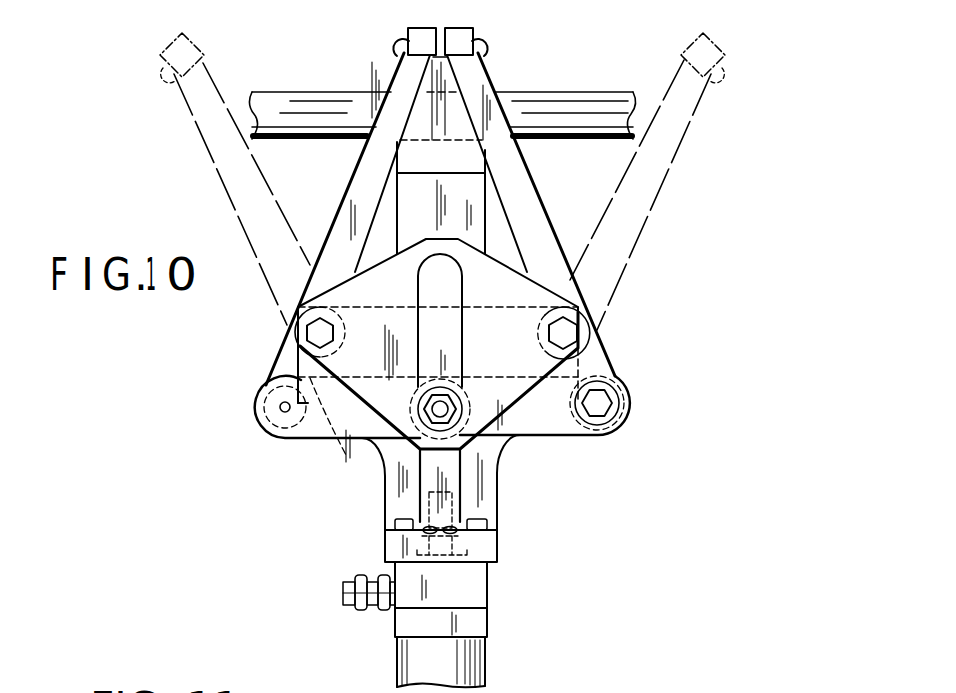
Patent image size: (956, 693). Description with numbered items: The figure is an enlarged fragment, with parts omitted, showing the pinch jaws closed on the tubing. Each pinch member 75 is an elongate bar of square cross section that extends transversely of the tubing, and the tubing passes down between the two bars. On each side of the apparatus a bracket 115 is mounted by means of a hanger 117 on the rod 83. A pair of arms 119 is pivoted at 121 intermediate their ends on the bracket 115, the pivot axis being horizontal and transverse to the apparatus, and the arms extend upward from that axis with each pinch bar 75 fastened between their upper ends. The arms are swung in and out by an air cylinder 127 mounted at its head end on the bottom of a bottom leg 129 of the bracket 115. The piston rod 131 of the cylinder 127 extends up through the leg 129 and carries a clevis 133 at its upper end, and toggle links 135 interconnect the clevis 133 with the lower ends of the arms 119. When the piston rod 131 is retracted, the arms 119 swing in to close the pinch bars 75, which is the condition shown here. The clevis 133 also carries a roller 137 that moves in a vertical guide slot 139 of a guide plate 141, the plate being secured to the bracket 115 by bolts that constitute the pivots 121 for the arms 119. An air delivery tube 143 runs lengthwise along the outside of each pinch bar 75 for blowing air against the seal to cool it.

The pinch member 75 is at (424, 30).
The rod 83 is at (305, 100).
The bracket 115 is at (433, 308).
The hanger 117 is at (470, 197).
The arm 119 is at (400, 74).
The pivot 121 is at (320, 333).
The air cylinder 127 is at (467, 662).
The bottom leg 129 is at (488, 545).
The piston rod 131 is at (427, 502).
The clevis 133 is at (423, 473).
The toggle link 135 is at (317, 431).
The roller 137 is at (470, 400).
The vertical guide slot 139 is at (463, 340).
The guide plate 141 is at (533, 293).
The air delivery tube 143 is at (394, 45).